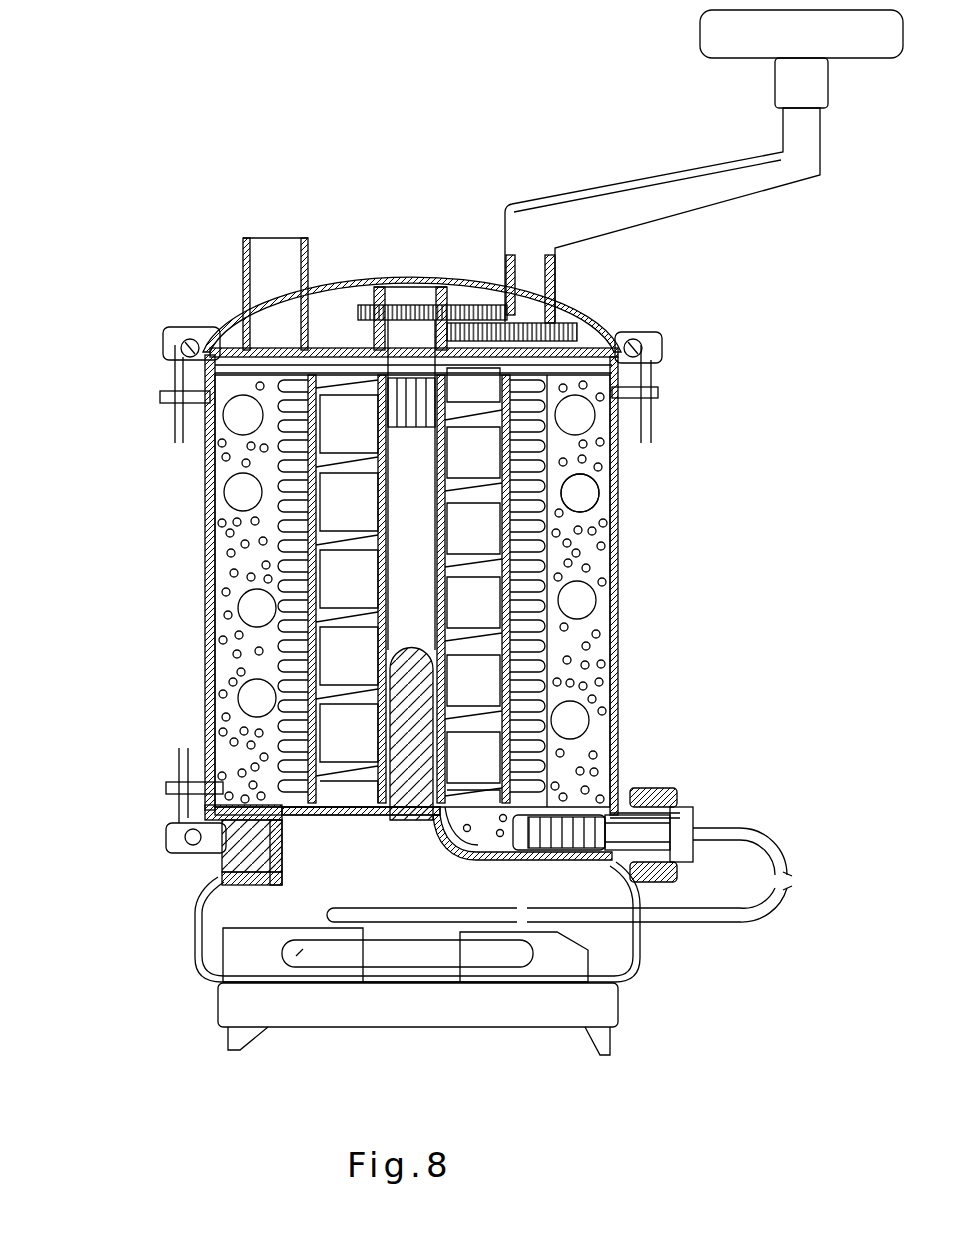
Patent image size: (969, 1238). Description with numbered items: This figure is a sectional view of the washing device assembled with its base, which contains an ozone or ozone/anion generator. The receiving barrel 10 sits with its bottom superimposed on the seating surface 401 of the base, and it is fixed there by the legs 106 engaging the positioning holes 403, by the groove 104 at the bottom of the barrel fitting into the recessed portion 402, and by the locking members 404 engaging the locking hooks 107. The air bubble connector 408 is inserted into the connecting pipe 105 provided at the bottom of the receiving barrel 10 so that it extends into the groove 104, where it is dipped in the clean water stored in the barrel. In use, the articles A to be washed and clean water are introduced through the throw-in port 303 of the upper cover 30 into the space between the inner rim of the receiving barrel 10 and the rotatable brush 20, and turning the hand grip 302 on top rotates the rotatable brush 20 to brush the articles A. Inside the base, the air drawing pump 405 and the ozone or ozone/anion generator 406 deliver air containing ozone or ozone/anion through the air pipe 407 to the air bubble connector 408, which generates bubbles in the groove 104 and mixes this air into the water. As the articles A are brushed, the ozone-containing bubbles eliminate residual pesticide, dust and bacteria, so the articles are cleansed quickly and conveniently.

The receiving barrel 10 is at (628, 577).
The rotatable brush 20 is at (268, 548).
The upper cover 30 is at (391, 260).
The hand grip 302 is at (620, 172).
The throw-in port 303 is at (272, 262).
The articles to be washed A is at (598, 491).
The groove 104 is at (488, 833).
The connecting pipe 105 is at (652, 788).
The legs 106 is at (236, 878).
The locking hooks 107 is at (178, 782).
The seating surface 401 is at (323, 827).
The recessed portion 402 is at (591, 878).
The positioning holes 403 is at (215, 860).
The locking members 404 is at (170, 828).
The air drawing pump 405 is at (545, 962).
The ozone or ozone/anion generator 406 is at (255, 966).
The air pipe 407 is at (681, 923).
The air bubble connector 408 is at (698, 812).